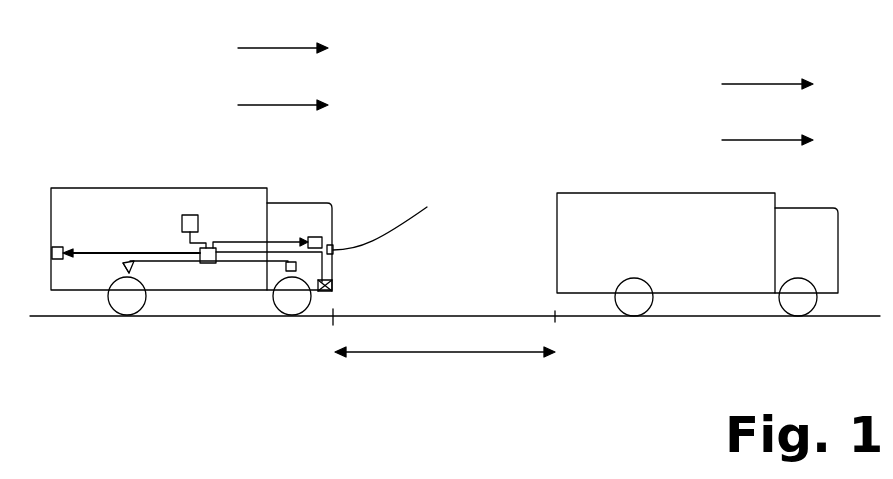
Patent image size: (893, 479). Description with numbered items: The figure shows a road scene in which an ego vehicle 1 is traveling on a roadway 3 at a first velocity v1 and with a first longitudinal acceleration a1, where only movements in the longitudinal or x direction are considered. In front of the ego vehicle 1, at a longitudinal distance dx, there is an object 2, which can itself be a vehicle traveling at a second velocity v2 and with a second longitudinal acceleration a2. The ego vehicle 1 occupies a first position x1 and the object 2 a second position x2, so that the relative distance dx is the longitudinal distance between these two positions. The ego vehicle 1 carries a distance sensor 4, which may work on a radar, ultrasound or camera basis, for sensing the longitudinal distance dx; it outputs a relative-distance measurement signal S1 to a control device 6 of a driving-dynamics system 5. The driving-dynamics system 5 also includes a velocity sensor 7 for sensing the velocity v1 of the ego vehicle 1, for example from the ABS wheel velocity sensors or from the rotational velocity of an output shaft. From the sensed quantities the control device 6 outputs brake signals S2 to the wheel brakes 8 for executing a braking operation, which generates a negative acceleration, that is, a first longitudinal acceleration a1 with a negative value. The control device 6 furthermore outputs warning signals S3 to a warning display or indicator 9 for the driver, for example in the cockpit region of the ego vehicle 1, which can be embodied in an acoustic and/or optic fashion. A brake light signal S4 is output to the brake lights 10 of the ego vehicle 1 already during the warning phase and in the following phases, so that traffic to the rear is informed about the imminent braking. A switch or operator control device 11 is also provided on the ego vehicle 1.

The ego vehicle 1 is at (243, 254).
The object 2 is at (566, 193).
The roadway 3 is at (496, 316).
The distance sensor 4 is at (331, 283).
The driving-dynamics system 5 is at (141, 216).
The control device 6 is at (210, 264).
The velocity sensor 7 is at (184, 214).
The wheel brakes 8 is at (122, 268).
The warning display or indicator 9 is at (330, 236).
The brake light 10 is at (52, 254).
The switch, operator control device 11 is at (404, 213).
The distance measurement signal S1 is at (287, 250).
The brake signal S2 is at (177, 261).
The warning signal S3 is at (308, 237).
The brake light signal S4 is at (98, 254).
The first longitudinal acceleration a1 is at (260, 52).
The first velocity v1 is at (261, 106).
The second longitudinal acceleration a2 is at (740, 86).
The second velocity v2 is at (740, 139).
The longitudinal distance dx is at (445, 380).
The first position x1 is at (332, 321).
The second position x2 is at (556, 319).